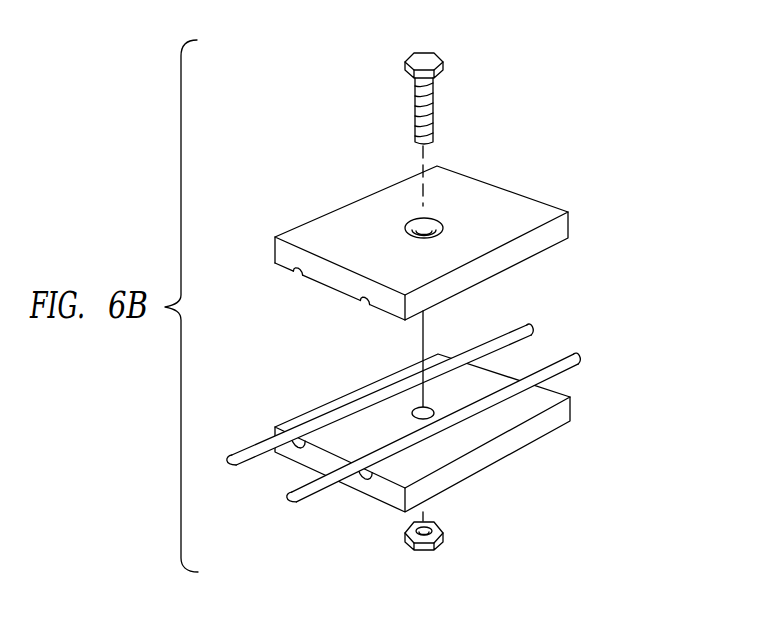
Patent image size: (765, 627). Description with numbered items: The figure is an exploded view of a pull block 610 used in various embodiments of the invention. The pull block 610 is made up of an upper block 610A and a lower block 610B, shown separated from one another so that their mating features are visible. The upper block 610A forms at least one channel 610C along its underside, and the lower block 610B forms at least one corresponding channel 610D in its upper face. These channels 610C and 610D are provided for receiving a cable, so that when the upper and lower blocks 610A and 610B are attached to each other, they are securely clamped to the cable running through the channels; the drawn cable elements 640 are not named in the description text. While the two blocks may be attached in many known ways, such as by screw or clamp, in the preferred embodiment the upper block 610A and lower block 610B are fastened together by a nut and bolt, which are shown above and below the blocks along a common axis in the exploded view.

The pull block 610 is at (328, 158).
The upper block 610A is at (427, 250).
The lower block 610B is at (534, 438).
The channel 610C is at (366, 303).
The channel 610D is at (305, 441).
The rods 640 is at (528, 333).